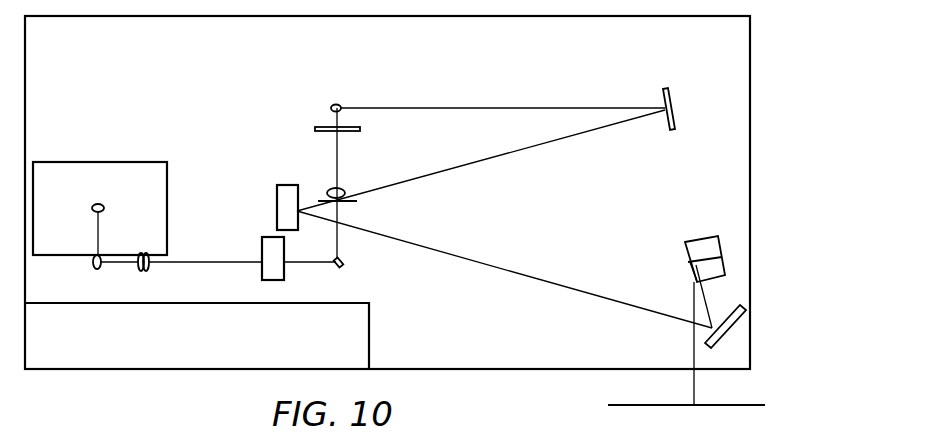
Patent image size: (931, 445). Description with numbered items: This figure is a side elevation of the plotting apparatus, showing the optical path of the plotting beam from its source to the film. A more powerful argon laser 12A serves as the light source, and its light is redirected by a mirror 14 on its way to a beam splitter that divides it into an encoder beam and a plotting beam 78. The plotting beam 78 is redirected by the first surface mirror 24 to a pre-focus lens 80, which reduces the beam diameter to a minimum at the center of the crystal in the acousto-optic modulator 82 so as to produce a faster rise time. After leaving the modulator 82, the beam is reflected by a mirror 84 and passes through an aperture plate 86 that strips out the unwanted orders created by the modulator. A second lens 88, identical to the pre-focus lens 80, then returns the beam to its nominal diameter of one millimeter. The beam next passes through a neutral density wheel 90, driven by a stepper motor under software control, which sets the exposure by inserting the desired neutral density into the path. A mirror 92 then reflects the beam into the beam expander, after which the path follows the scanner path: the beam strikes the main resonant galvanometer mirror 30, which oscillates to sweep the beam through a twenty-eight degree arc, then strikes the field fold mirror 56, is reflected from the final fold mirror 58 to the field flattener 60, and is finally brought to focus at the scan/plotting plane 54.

The laser 12A is at (103, 162).
The mirror 14 is at (104, 206).
The first surface mirror 24 is at (93, 267).
The plotting beam 78 is at (122, 266).
The lens 80 is at (150, 268).
The acousto-optic modulator 82 is at (262, 250).
The mirror 84 is at (345, 266).
The field fold mirror 56 is at (276, 198).
The aperture plate 86 is at (355, 202).
The lens 88 is at (341, 188).
The neutral density wheel 90 is at (355, 132).
The mirror 92 is at (339, 105).
The main resonant galvanometer mirror 30 is at (676, 97).
The field flattener 60 is at (685, 252).
The final fold mirror 58 is at (745, 309).
The scan/plotting plane 54 is at (734, 405).